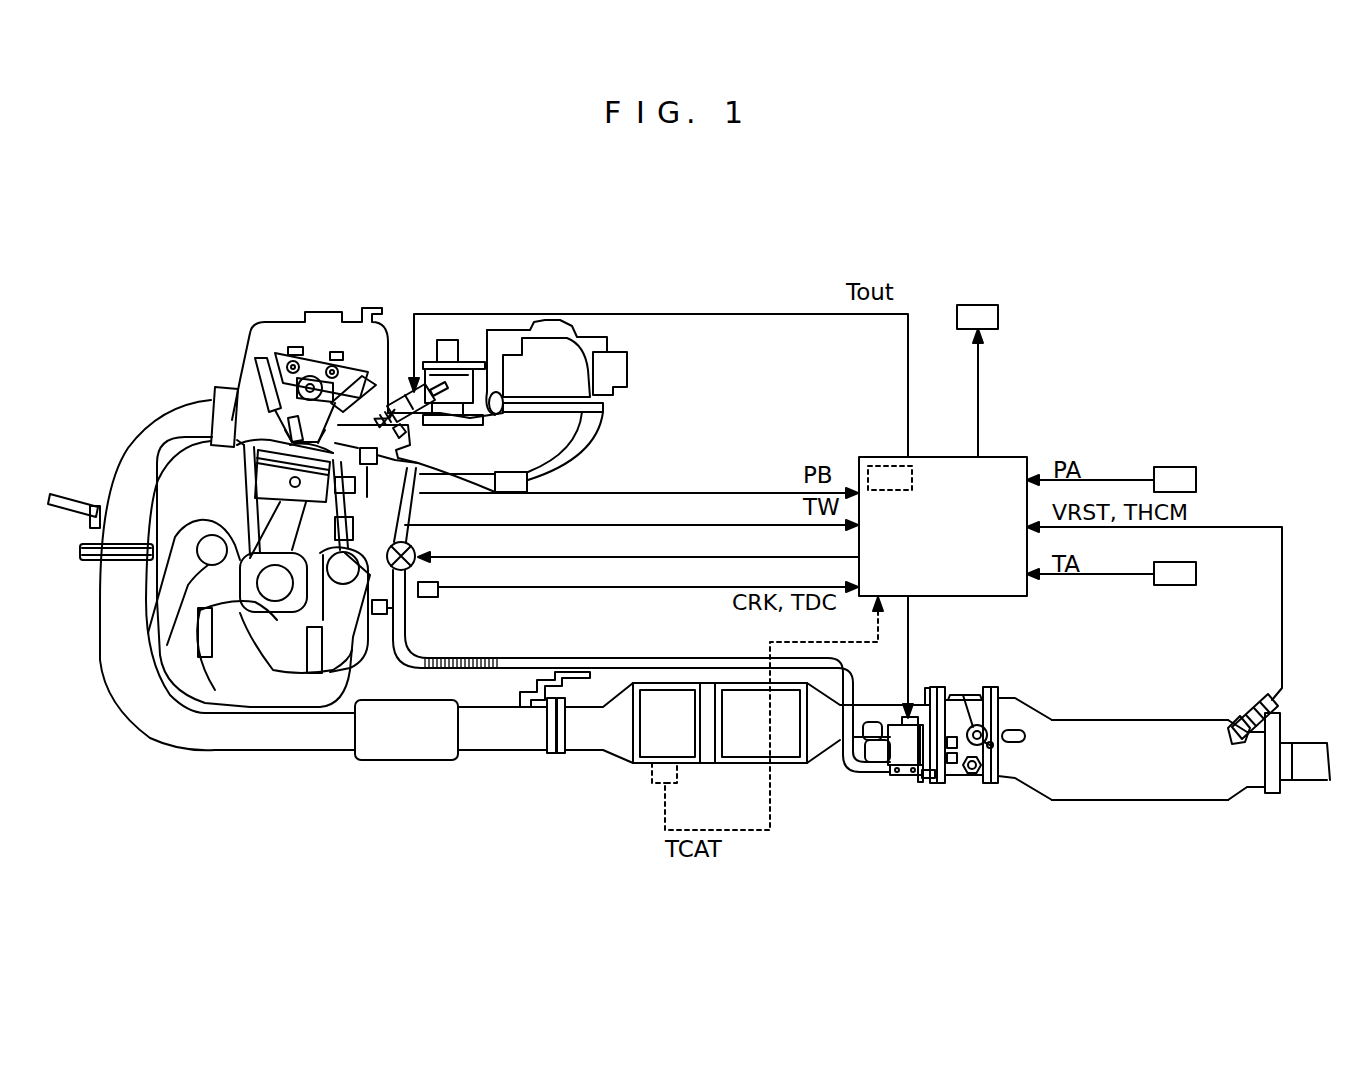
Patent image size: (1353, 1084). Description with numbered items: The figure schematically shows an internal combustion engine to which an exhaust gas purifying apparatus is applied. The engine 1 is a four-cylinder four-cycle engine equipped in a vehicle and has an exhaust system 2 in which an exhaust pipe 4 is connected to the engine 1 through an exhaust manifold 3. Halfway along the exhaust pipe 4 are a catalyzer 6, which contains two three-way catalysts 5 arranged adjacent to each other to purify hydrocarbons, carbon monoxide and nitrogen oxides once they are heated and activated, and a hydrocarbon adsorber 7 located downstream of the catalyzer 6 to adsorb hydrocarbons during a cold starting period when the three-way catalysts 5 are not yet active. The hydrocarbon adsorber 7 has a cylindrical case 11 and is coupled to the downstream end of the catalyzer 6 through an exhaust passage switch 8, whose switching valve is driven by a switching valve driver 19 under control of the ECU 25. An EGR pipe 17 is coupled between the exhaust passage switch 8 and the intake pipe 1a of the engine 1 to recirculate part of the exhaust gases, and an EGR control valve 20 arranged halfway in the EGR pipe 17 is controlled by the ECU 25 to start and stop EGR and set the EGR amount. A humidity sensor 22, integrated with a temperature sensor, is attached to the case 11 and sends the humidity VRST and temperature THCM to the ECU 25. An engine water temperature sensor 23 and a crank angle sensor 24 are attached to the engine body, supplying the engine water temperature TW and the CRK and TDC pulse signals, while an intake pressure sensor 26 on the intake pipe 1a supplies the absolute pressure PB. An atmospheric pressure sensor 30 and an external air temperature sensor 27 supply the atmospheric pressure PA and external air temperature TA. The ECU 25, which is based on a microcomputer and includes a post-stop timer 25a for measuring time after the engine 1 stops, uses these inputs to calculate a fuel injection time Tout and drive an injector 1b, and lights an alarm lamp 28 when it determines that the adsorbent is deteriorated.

The engine 1 is at (286, 296).
The intake pipe 1a is at (476, 453).
The injector 1b is at (389, 390).
The exhaust system 2 is at (787, 750).
The exhaust manifold 3 is at (215, 393).
The exhaust pipe 4 is at (170, 742).
The three-way catalysts 5 is at (740, 757).
The catalyzer 6 is at (707, 774).
The hydrocarbon adsorber 7 is at (1191, 708).
The exhaust passage switch 8 is at (970, 680).
The case 11 is at (1165, 720).
The EGR pipe 17 is at (862, 772).
The switching valve driver 19 is at (908, 778).
The EGR control valve 20 is at (417, 563).
The humidity sensor 22 is at (1265, 787).
The engine water temperature sensor 23 is at (252, 477).
The crank angle sensor 24 is at (433, 600).
The ECU 25 is at (945, 482).
The post-stop timer 25a is at (880, 462).
The intake pressure sensor 26 is at (422, 468).
The external air temperature sensor 27 is at (1187, 587).
The alarm lamp 28 is at (977, 305).
The atmospheric pressure sensor 30 is at (1185, 468).